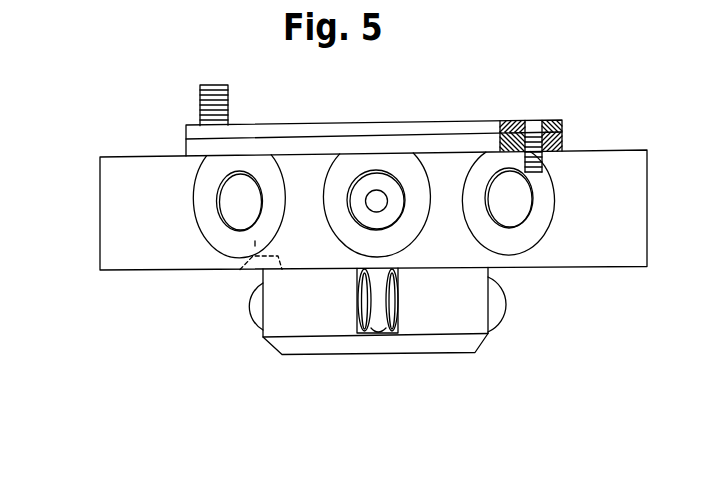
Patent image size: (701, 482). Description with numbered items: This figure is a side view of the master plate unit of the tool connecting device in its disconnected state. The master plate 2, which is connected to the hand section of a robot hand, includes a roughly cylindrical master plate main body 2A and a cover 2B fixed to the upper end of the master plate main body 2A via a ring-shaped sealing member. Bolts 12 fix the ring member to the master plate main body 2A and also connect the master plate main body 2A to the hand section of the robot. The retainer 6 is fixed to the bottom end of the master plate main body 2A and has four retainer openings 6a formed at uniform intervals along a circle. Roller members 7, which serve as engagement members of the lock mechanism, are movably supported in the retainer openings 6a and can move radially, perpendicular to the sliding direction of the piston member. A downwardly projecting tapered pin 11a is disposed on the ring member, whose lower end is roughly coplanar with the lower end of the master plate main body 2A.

The master plate 2 is at (105, 145).
The master plate main body 2A is at (153, 170).
The cover 2B is at (360, 125).
The bolts 12 is at (200, 100).
The retainer 6 is at (312, 332).
The retainer openings 6a is at (355, 279).
The roller members 7 is at (250, 305).
The tapered pin 11a is at (380, 333).